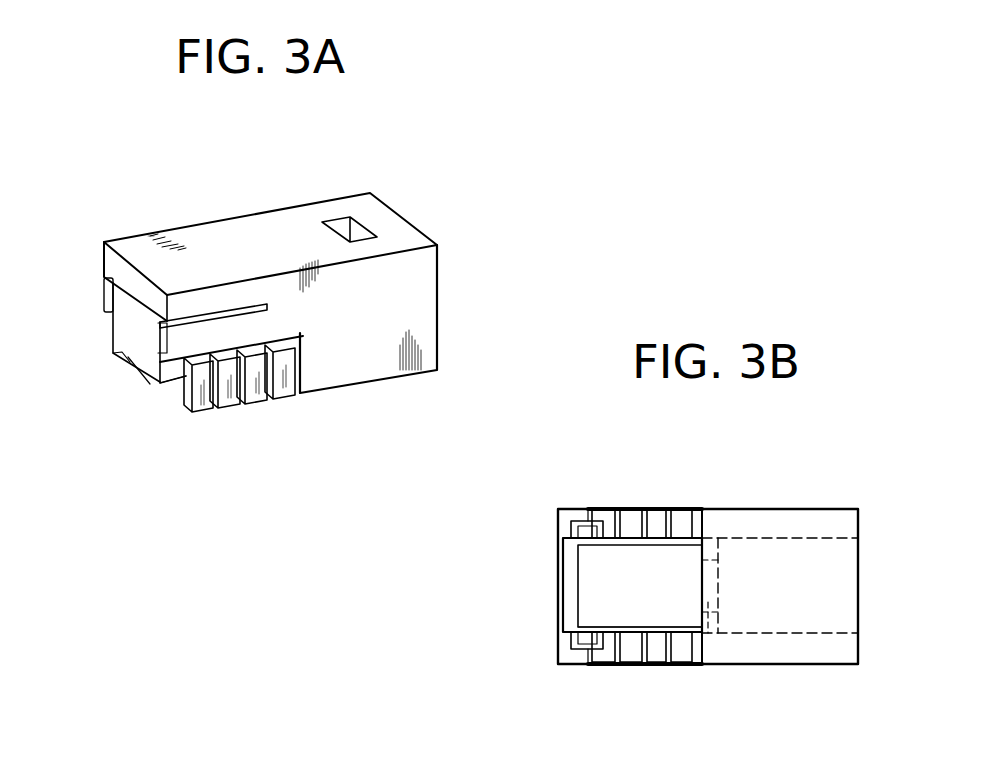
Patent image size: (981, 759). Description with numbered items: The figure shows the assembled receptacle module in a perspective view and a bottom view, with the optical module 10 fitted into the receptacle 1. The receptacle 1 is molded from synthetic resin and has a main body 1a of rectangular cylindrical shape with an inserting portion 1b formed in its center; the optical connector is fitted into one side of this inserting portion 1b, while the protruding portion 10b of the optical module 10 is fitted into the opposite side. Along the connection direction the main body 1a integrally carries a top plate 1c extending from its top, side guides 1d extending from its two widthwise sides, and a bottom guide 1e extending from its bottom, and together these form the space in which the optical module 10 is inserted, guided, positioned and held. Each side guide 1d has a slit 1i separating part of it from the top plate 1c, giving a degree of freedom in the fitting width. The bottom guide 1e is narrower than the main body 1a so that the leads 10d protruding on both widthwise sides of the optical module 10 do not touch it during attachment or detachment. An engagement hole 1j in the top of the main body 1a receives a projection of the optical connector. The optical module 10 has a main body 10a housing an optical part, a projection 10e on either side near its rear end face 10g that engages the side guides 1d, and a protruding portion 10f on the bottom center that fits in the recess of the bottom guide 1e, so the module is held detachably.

In FIG. 3A, the receptacle 1 is at (248, 214).
In FIG. 3B, the receptacle 1 is at (756, 506).
In FIG. 3A, the main body 1a is at (413, 297).
In FIG. 3B, the main body 1a is at (790, 650).
In FIG. 3B, the inserting portion 1b is at (806, 542).
In FIG. 3A, the top plate 1c is at (183, 243).
In FIG. 3A, the side guide 1d is at (104, 292).
In FIG. 3B, the side guide 1d is at (571, 523).
In FIG. 3A, the bottom guide 1e is at (178, 386).
In FIG. 3B, the bottom guide 1e is at (593, 595).
In FIG. 3A, the slit 1i is at (228, 313).
In FIG. 3A, the engagement hole 1j is at (343, 228).
In FIG. 3A, the optical module 10 is at (121, 365).
In FIG. 3B, the optical module 10 is at (555, 551).
In FIG. 3B, the main body 10a is at (572, 622).
In FIG. 3B, the protruding portion 10b is at (707, 636).
In FIG. 3A, the leads 10d is at (272, 400).
In FIG. 3B, the leads 10d is at (681, 510).
In FIG. 3B, the projection 10e is at (590, 526).
In FIG. 3A, the protruding portion 10f is at (145, 380).
In FIG. 3A, the rear end face 10g is at (134, 373).
In FIG. 3B, the rear end face 10g is at (563, 582).